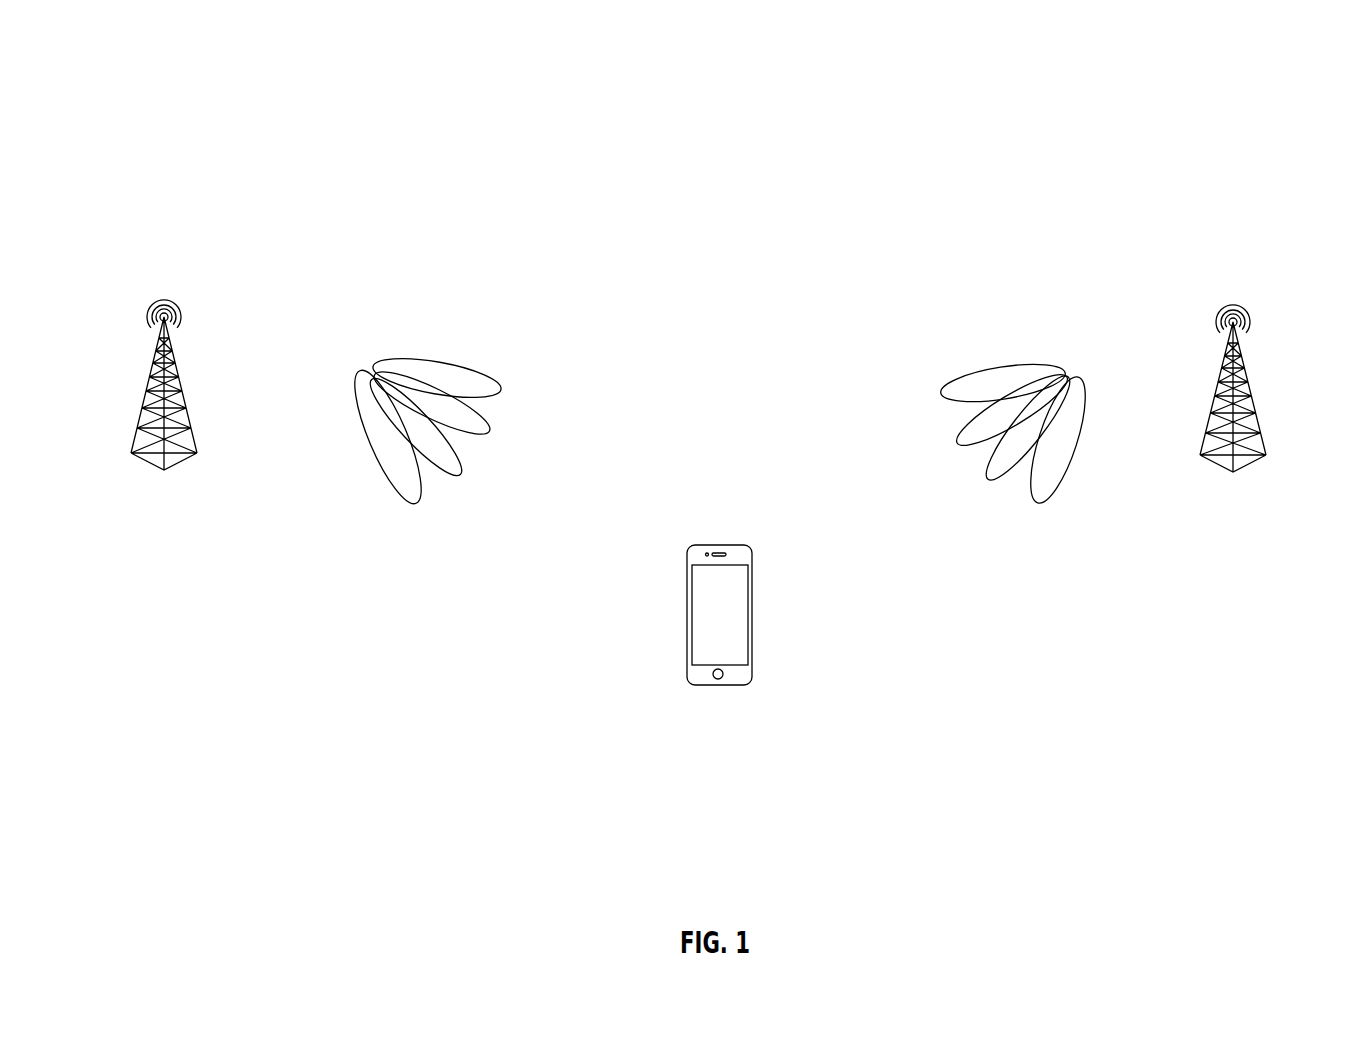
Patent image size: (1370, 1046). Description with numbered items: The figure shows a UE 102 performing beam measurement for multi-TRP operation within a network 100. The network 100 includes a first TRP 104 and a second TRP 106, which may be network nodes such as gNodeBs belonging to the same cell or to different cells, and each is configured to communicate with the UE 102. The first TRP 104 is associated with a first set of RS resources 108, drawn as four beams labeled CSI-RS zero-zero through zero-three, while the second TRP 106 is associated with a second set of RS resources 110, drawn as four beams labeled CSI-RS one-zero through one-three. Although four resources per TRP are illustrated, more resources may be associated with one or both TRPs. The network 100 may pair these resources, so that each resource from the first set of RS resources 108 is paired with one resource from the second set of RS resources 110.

The network 100 is at (1268, 103).
The UE 102 is at (719, 615).
The first TRP 104 is at (165, 406).
The second TRP 106 is at (1232, 409).
The first set of RS resources 108 is at (418, 333).
The second set of RS resources 110 is at (978, 346).